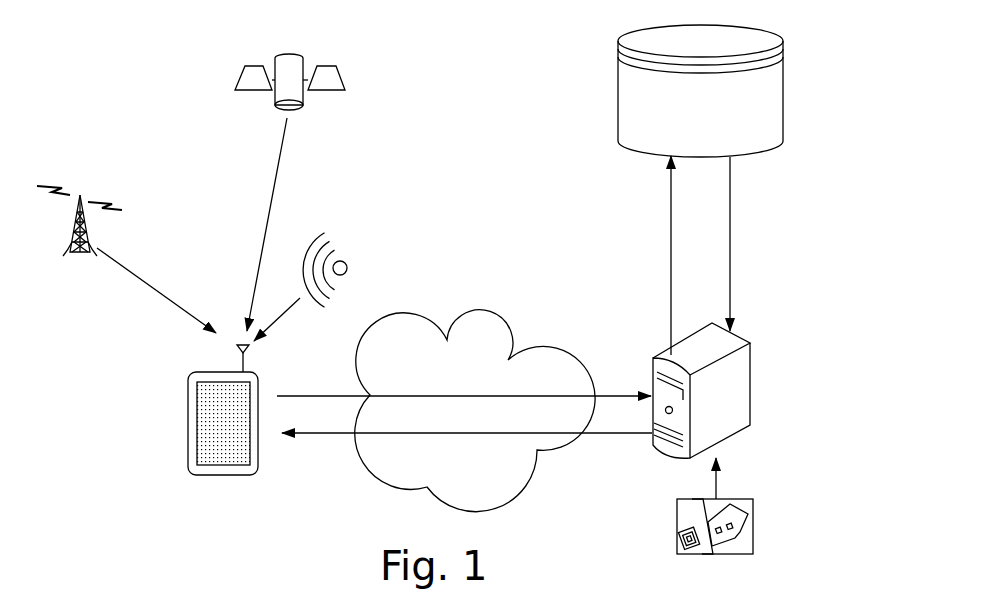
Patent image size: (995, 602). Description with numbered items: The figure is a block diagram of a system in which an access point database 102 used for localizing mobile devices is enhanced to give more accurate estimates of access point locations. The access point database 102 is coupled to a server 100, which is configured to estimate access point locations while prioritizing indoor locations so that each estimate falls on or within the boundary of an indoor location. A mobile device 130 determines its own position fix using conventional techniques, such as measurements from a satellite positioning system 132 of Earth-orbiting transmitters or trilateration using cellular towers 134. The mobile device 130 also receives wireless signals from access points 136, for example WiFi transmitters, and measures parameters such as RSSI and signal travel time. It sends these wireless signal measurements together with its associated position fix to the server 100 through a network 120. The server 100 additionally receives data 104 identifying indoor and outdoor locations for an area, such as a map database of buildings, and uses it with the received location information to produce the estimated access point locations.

The server 100 is at (750, 362).
The access point database 102 is at (618, 88).
The data identifying indoor locations and outdoor locations 104 is at (753, 532).
The network 120 is at (505, 334).
The mobile device 130 is at (189, 412).
The satellite positioning system 132 is at (340, 72).
The cellular tower 134 is at (80, 195).
The access point 136 is at (347, 264).